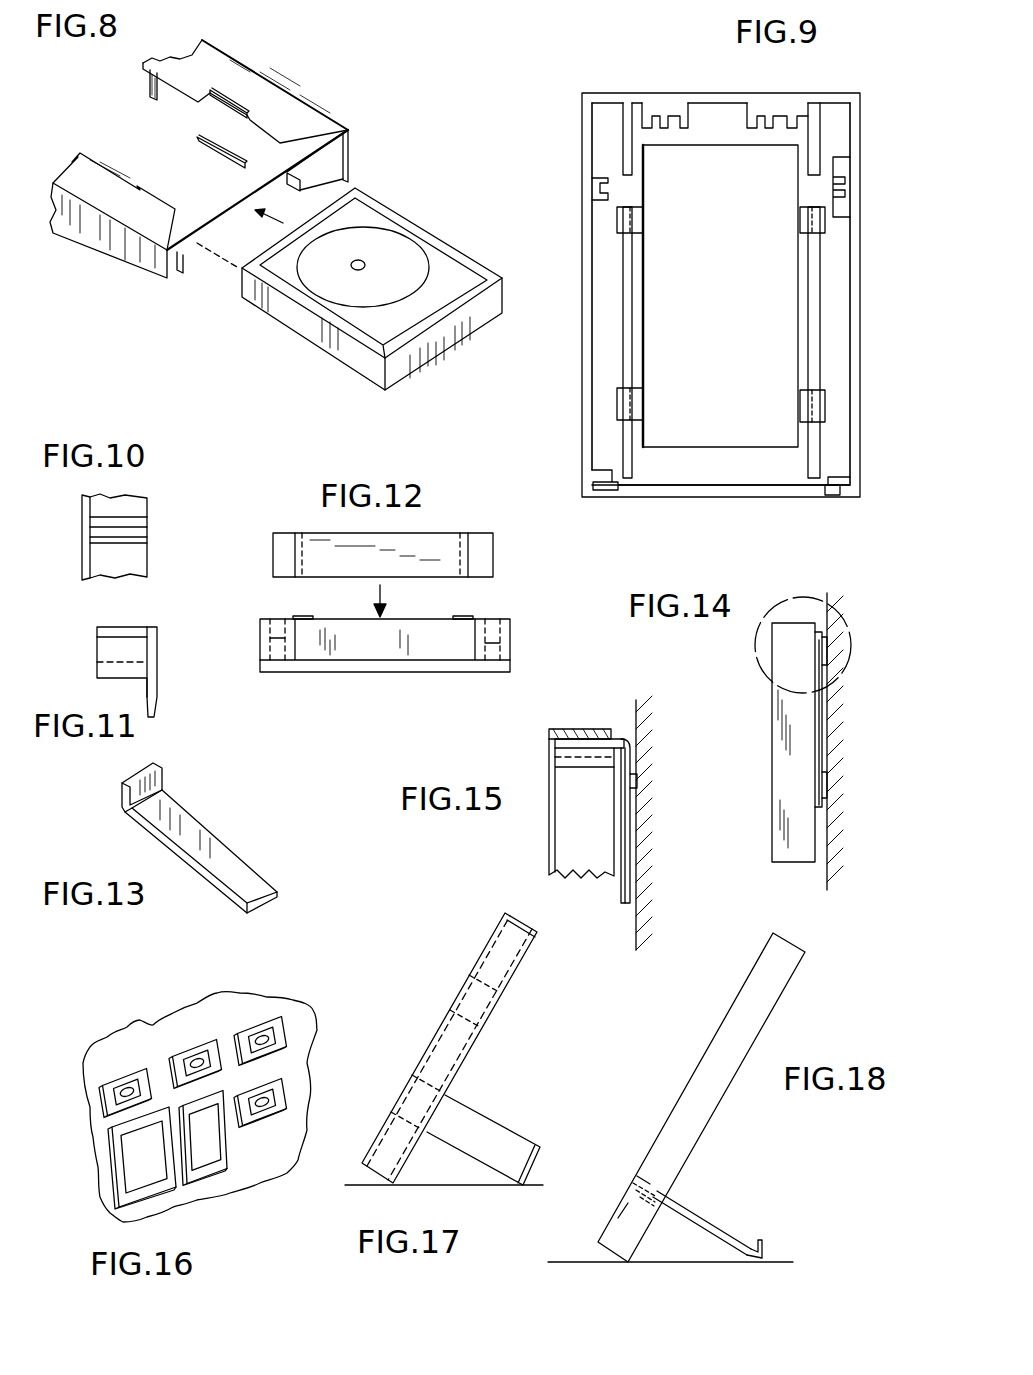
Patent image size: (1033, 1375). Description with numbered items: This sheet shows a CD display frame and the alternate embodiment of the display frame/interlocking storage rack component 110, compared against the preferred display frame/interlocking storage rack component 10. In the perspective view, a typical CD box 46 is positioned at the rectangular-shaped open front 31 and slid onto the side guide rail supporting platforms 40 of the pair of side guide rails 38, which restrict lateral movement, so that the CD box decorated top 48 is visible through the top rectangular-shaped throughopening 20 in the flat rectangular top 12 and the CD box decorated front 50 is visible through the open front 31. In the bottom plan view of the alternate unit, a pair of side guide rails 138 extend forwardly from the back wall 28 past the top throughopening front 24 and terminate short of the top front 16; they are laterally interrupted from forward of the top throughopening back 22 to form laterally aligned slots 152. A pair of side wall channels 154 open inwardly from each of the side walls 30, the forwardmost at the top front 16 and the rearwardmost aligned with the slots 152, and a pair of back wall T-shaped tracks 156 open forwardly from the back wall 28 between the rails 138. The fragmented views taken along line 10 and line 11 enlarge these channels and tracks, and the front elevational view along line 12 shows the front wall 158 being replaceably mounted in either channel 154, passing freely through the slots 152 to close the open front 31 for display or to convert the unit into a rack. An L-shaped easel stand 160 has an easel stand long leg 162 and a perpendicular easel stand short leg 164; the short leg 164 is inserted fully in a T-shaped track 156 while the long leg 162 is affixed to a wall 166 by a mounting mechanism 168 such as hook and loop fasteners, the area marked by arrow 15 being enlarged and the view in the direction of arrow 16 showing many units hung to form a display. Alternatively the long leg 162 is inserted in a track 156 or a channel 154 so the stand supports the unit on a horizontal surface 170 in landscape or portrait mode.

In FIG. 9, the display frame/interlocking storage rack component 10 is at (886, 154).
In FIG. 9, the line 11— 11 is at (690, 64).
In FIG. 9, the top 12 is at (615, 253).
In FIG. 10, the top 12 is at (82, 560).
In FIG. 11, the top 12 is at (162, 663).
In FIG. 14, the arrow 15 is at (758, 665).
In FIG. 9, the top front 16 is at (612, 497).
In FIG. 14, the top front 16 is at (745, 752).
In FIG. 18, the top front 16 is at (700, 1222).
In FIG. 8, the top rectangular-shaped throughopening 20 is at (133, 140).
In FIG. 9, the top rectangular-shaped throughopening 20 is at (728, 294).
In FIG. 9, the top throughopening back 22 is at (722, 160).
In FIG. 9, the top throughopening front 24 is at (728, 447).
In FIG. 9, the back wall 28 is at (603, 93).
In FIG. 11, the back wall 28 is at (137, 627).
In FIG. 9, the side walls 30 is at (580, 333).
In FIG. 10, the side walls 30 is at (137, 563).
In FIG. 12, the side walls 30 is at (385, 645).
In FIG. 8, the rectangular-shaped open front 31 is at (193, 233).
In FIG. 8, the side guide rails 38 is at (153, 88).
In FIG. 8, the side guide rail supporting platforms 40 is at (227, 157).
In FIG. 9, the side guide rail supporting platforms 40 is at (802, 220).
In FIG. 12, the side guide rail supporting platforms 40 is at (300, 616).
In FIG. 8, the CD box 46 is at (302, 323).
In FIG. 8, the CD box decorated top 48 is at (388, 258).
In FIG. 16, the CD box decorated top 48 is at (127, 1097).
In FIG. 8, the CD box decorated front 50 is at (435, 352).
In FIG. 9, the display frame/interlocking storage rack component 110 is at (564, 191).
In FIG. 16, the display frame/interlocking storage rack component 110 is at (113, 1072).
In FIG. 9, the side guide rails 138 is at (815, 312).
In FIG. 9, the laterally aligned slots 152 is at (808, 187).
In FIG. 9, the side wall channels 154 is at (602, 180).
In FIG. 10, the side wall channels 154 is at (140, 530).
In FIG. 12, the side wall channels 154 is at (283, 638).
In FIG. 18, the side wall channels 154 is at (627, 1160).
In FIG. 9, the back wall T-shaped tracks 156 is at (780, 104).
In FIG. 11, the back wall T-shaped tracks 156 is at (108, 642).
In FIG. 12, the back wall T-shaped tracks 156 is at (383, 555).
In FIG. 14, the back wall T-shaped tracks 156 is at (793, 742).
In FIG. 15, the back wall T-shaped tracks 156 is at (556, 741).
In FIG. 17, the back wall T-shaped tracks 156 is at (500, 1007).
In FIG. 18, the back wall T-shaped tracks 156 is at (701, 1097).
In FIG. 9, the front wall 158 is at (750, 497).
In FIG. 13, the L-shaped easel stand 160 is at (213, 833).
In FIG. 14, the L-shaped easel stand 160 is at (820, 630).
In FIG. 15, the L-shaped easel stand 160 is at (626, 737).
In FIG. 17, the L-shaped easel stand 160 is at (467, 1102).
In FIG. 18, the L-shaped easel stand 160 is at (685, 1213).
In FIG. 13, the easel stand long leg 162 is at (253, 890).
In FIG. 14, the easel stand long leg 162 is at (817, 743).
In FIG. 15, the easel stand long leg 162 is at (627, 851).
In FIG. 17, the easel stand long leg 162 is at (515, 1112).
In FIG. 18, the easel stand long leg 162 is at (735, 1240).
In FIG. 13, the easel stand short leg 164 is at (125, 798).
In FIG. 15, the easel stand short leg 164 is at (578, 739).
In FIG. 14, the wall 166 is at (865, 682).
In FIG. 15, the wall 166 is at (648, 821).
In FIG. 16, the wall 166 is at (272, 1157).
In FIG. 15, the mounting mechanism 168 is at (639, 777).
In FIG. 17, the horizontal surface 170 is at (445, 1187).
In FIG. 18, the horizontal surface 170 is at (692, 1263).